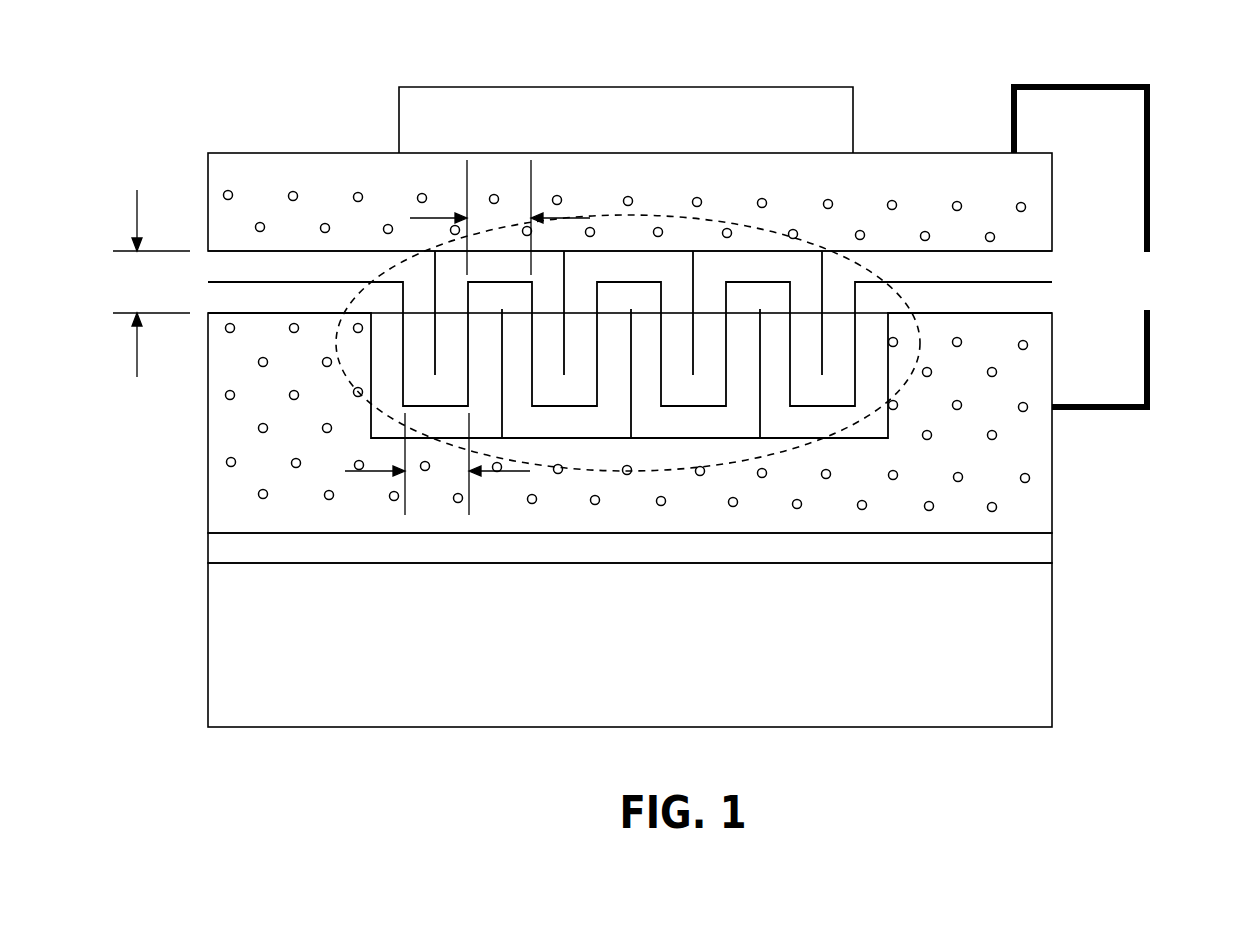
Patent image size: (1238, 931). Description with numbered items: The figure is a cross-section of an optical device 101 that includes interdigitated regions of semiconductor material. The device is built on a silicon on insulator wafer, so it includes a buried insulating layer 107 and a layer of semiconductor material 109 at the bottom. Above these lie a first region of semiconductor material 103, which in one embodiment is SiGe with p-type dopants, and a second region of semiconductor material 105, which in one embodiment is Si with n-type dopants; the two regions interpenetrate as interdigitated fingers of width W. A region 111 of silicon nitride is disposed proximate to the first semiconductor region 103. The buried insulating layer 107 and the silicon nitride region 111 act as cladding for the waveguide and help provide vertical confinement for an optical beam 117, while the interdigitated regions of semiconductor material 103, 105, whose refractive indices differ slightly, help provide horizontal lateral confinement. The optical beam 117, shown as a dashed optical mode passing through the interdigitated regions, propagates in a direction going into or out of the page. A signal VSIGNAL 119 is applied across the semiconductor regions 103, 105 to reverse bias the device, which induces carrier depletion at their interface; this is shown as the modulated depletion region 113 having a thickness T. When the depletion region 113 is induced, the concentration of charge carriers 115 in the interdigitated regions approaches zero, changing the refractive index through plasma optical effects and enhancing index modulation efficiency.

The optical device 101 is at (1083, 30).
The first region of semiconductor material 103 is at (1040, 182).
The second region of semiconductor material 105 is at (1042, 460).
The buried insulating layer 107 is at (1042, 553).
The layer of semiconductor material 109 is at (1042, 638).
The region of Si3N4 111 is at (842, 113).
The modulated depletion region 113 is at (208, 251).
The charge carriers 115 is at (350, 191).
The optical beam 117 is at (798, 448).
The signal VSIGNAL 119 is at (1165, 266).